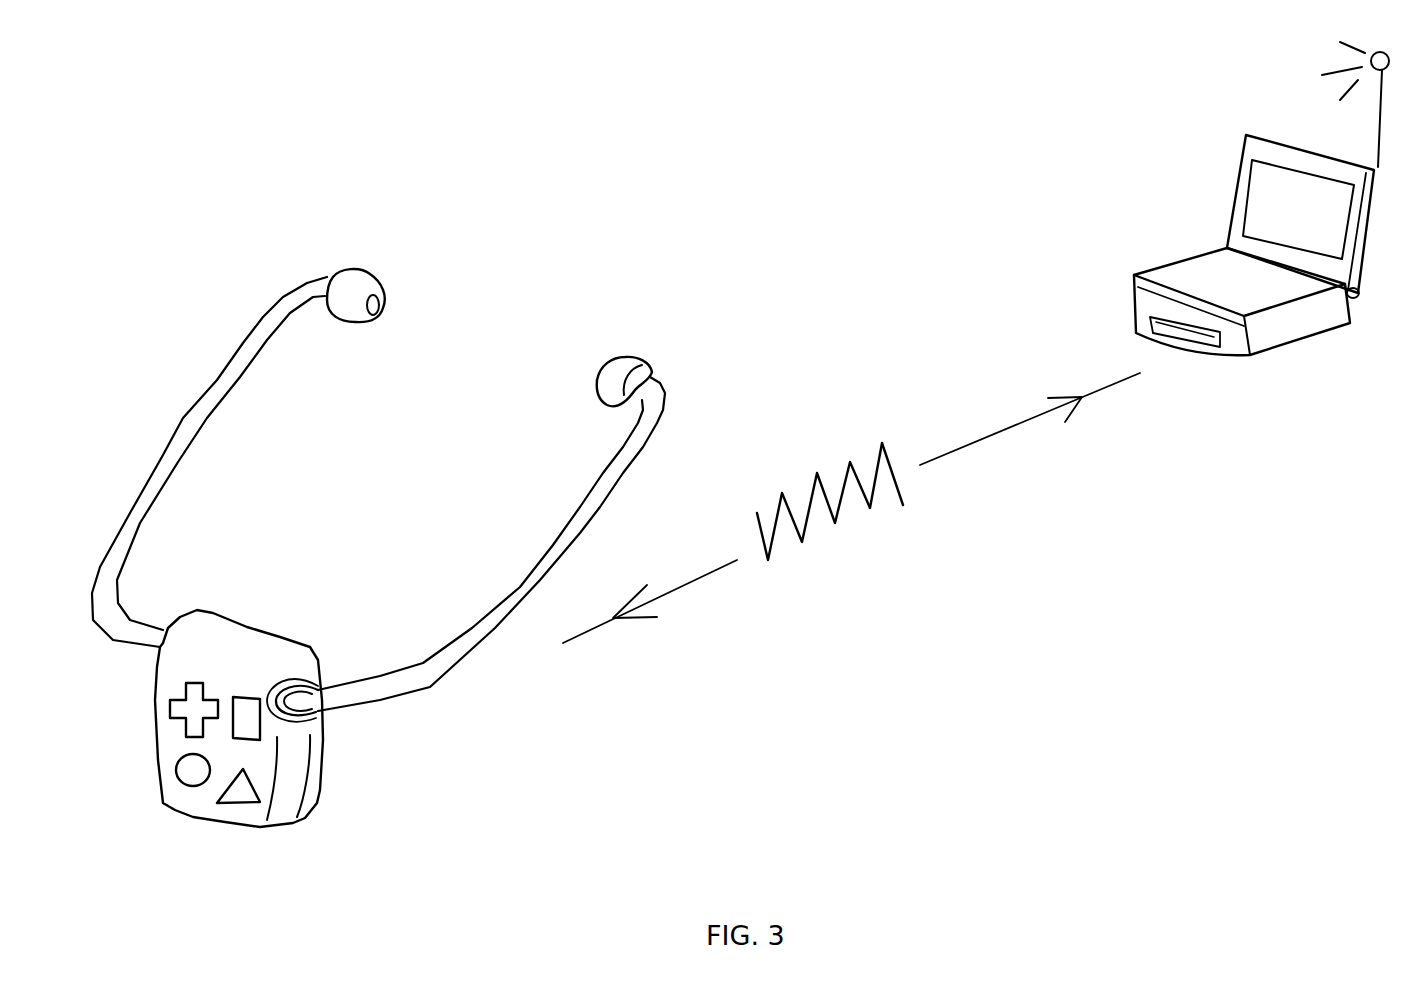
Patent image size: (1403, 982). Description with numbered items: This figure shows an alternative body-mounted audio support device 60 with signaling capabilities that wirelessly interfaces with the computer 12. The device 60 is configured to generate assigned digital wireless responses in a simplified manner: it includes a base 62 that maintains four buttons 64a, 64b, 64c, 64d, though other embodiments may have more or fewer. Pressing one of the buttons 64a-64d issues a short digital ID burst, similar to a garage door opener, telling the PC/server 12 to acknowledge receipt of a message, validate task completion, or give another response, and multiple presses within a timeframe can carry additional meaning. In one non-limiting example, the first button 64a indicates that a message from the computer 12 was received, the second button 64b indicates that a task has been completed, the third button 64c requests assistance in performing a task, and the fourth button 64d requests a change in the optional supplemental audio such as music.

The computer 12 is at (1252, 368).
The body-mounted audio support device 60 is at (362, 578).
The base 62 is at (241, 642).
The first button 64a is at (187, 713).
The second button 64b is at (250, 713).
The third button 64c is at (187, 777).
The fourth button 64d is at (233, 793).